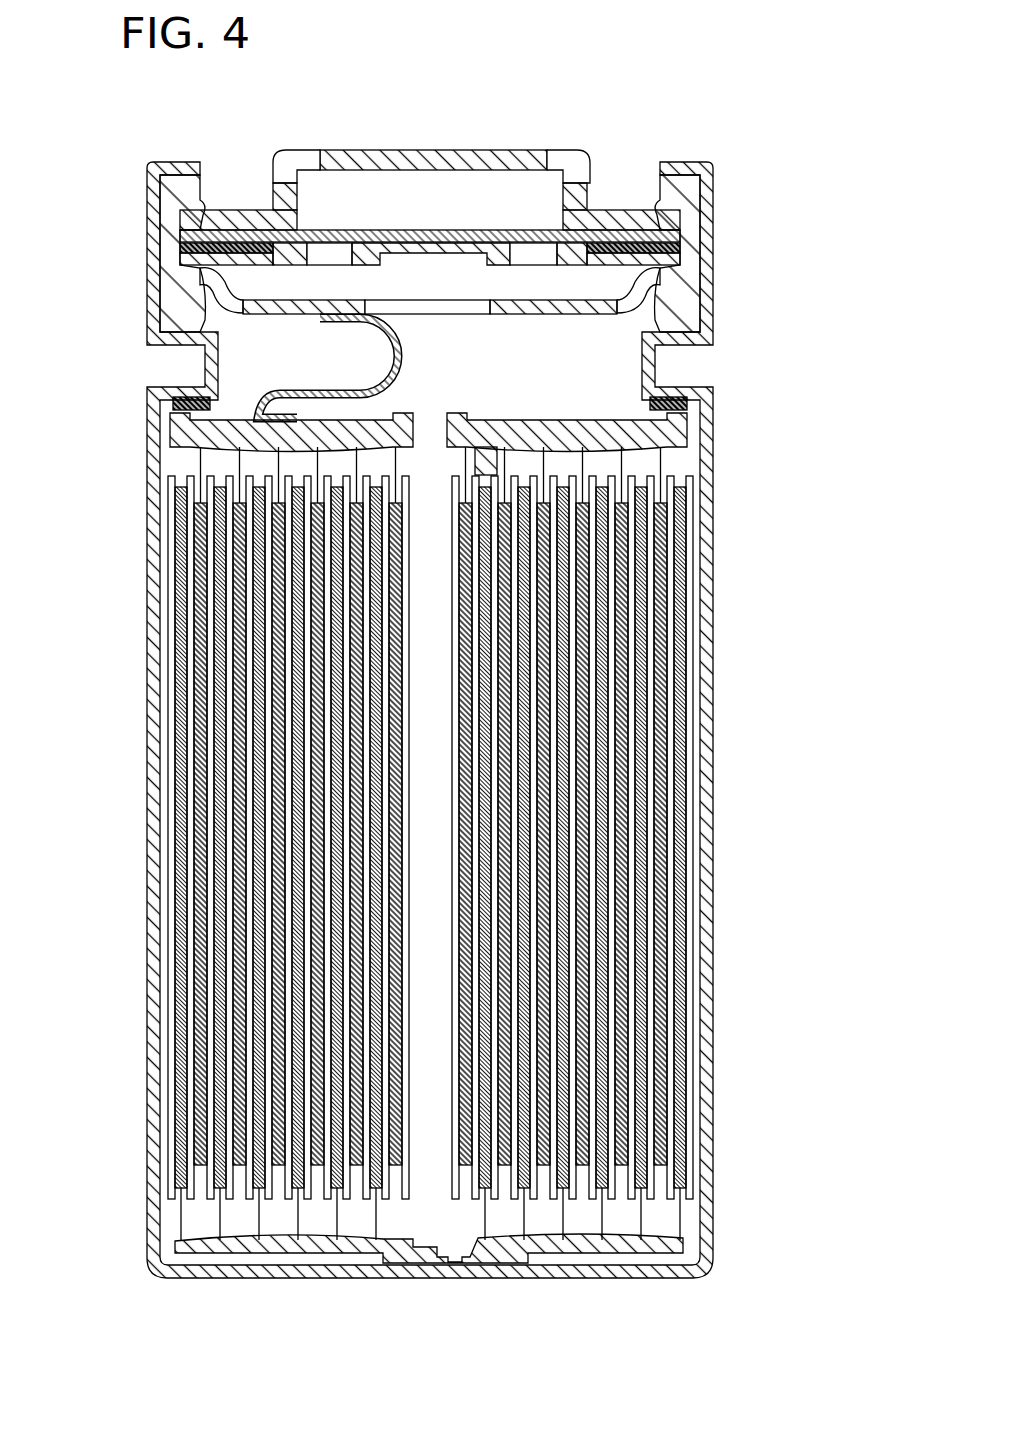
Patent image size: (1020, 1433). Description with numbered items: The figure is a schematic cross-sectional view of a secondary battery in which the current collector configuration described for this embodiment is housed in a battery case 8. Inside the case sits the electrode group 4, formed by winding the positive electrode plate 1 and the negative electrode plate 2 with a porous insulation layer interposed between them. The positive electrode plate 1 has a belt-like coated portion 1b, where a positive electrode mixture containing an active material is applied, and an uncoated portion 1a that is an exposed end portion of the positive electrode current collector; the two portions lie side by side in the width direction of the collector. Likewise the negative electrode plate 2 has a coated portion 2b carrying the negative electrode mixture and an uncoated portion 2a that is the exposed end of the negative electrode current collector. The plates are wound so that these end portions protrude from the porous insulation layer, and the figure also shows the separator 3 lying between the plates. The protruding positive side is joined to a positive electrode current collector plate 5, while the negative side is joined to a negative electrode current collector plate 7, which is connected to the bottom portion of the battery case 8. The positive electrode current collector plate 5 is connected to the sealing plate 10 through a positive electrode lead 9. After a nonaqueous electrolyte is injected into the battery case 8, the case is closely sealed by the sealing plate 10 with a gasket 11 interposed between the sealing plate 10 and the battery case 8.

The positive electrode plate 1 is at (401, 806).
The uncoated portion 1a is at (200, 460).
The coated portion 1b is at (193, 522).
The negative electrode plate 2 is at (498, 863).
The uncoated portion 2a is at (681, 1210).
The coated portion 2b is at (683, 1106).
The separator 3 is at (684, 540).
The electrode group 4 is at (427, 886).
The positive electrode current collector plate 5 is at (575, 417).
The negative electrode current collector plate 7 is at (578, 1252).
The battery case 8 is at (147, 893).
The positive electrode lead 9 is at (311, 392).
The sealing plate 10 is at (476, 152).
The gasket 11 is at (692, 186).